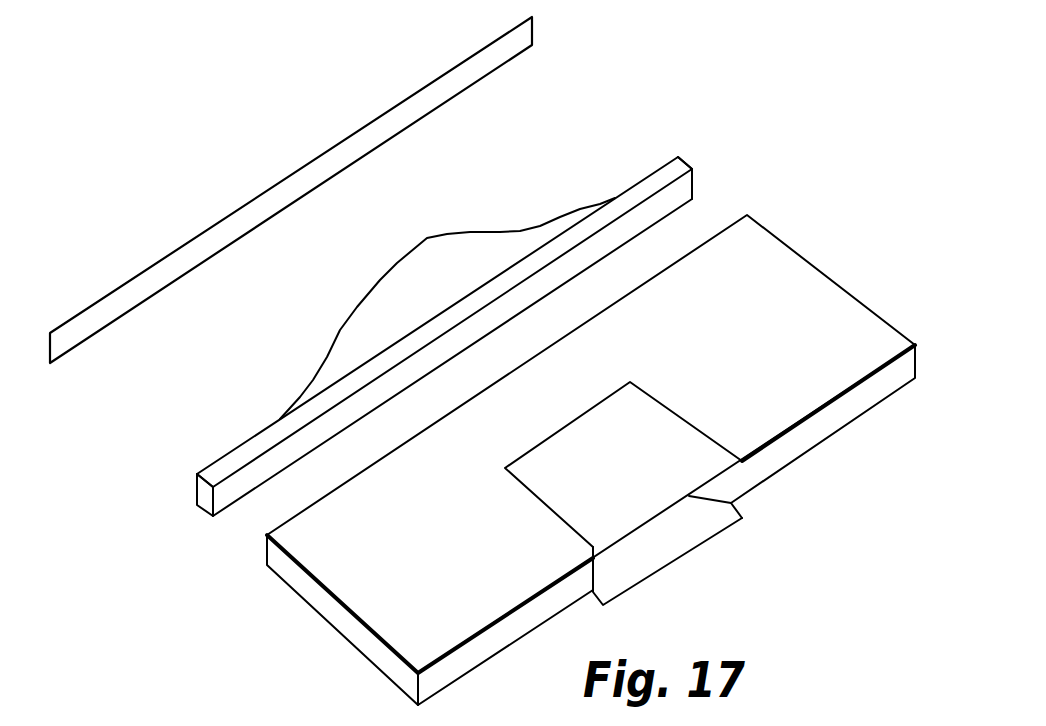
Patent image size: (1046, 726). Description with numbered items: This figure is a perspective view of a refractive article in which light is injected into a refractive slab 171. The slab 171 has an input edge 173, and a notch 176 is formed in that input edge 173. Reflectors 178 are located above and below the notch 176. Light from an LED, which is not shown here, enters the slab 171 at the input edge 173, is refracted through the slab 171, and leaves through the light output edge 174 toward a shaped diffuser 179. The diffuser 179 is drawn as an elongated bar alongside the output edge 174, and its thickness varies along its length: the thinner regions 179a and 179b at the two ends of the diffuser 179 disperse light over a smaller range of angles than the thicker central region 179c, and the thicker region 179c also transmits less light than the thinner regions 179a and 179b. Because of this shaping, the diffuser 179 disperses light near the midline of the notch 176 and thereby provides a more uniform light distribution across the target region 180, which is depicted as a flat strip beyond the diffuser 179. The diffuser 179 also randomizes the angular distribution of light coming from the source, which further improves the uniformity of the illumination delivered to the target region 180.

The refractive slab 171 is at (843, 226).
The input edge 173 is at (863, 403).
The light output edge 174 is at (745, 215).
The notch 176 is at (708, 495).
The reflectors 178 is at (646, 514).
The shaped diffuser 179 is at (444, 316).
The thinner region 179a is at (256, 443).
The thinner region 179b is at (655, 177).
The thicker central region 179c is at (398, 270).
The target region 180 is at (342, 142).